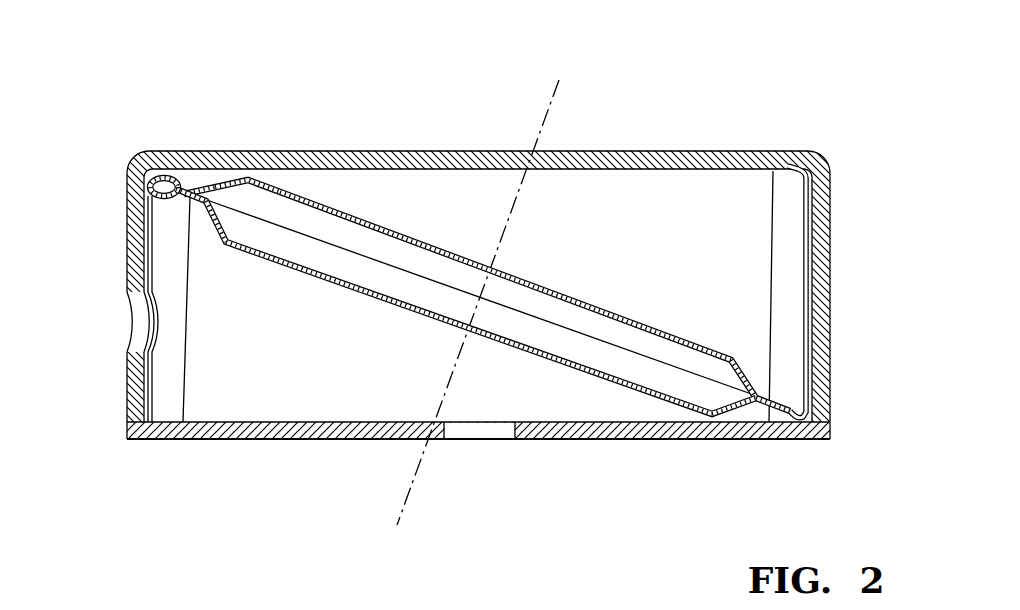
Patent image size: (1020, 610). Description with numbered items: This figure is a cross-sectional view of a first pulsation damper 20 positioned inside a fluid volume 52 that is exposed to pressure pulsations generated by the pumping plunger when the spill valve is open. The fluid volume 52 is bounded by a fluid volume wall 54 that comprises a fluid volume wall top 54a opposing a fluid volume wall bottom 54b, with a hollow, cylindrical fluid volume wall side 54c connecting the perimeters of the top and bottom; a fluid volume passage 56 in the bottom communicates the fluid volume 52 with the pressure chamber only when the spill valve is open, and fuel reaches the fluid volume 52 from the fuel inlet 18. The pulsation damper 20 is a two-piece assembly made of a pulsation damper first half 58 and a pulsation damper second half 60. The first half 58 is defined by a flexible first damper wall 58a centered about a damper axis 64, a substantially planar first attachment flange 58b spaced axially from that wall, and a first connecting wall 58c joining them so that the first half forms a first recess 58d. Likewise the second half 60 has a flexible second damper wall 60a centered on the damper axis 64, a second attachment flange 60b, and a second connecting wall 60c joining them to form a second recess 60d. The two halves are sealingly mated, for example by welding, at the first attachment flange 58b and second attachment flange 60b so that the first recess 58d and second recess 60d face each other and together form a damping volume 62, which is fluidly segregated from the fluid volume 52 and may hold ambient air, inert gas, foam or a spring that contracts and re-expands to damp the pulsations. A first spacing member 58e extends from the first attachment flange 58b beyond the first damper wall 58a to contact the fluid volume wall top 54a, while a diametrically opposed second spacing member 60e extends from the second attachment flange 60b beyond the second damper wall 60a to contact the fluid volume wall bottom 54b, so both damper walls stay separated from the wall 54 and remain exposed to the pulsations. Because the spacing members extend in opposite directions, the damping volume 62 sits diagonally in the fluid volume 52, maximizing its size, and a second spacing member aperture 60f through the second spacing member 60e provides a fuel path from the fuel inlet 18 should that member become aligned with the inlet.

The fuel inlet 18 is at (135, 321).
The pulsation damper 20 is at (722, 328).
The fluid volume 52 is at (747, 230).
The fluid volume wall 54 is at (430, 280).
The fluid volume wall top 54a is at (370, 150).
The fluid volume wall bottom 54b is at (478, 481).
The fluid volume wall side 54c is at (131, 222).
The fluid volume passage 56 is at (493, 437).
The pulsation damper first half 58 is at (464, 297).
The first damper wall 58a is at (280, 192).
The first attachment flange 58b is at (192, 195).
The first connecting wall 58c is at (230, 197).
The first recess 58d is at (702, 362).
The first spacing member 58e is at (776, 328).
The pulsation damper second half 60 is at (400, 335).
The second damper wall 60a is at (283, 267).
The second attachment flange 60b is at (150, 184).
The second connecting wall 60c is at (215, 223).
The second recess 60d is at (610, 360).
The second spacing member 60e is at (168, 405).
The second spacing member aperture 60f is at (150, 338).
The damping volume 62 is at (688, 475).
The damper axis 64 is at (420, 470).